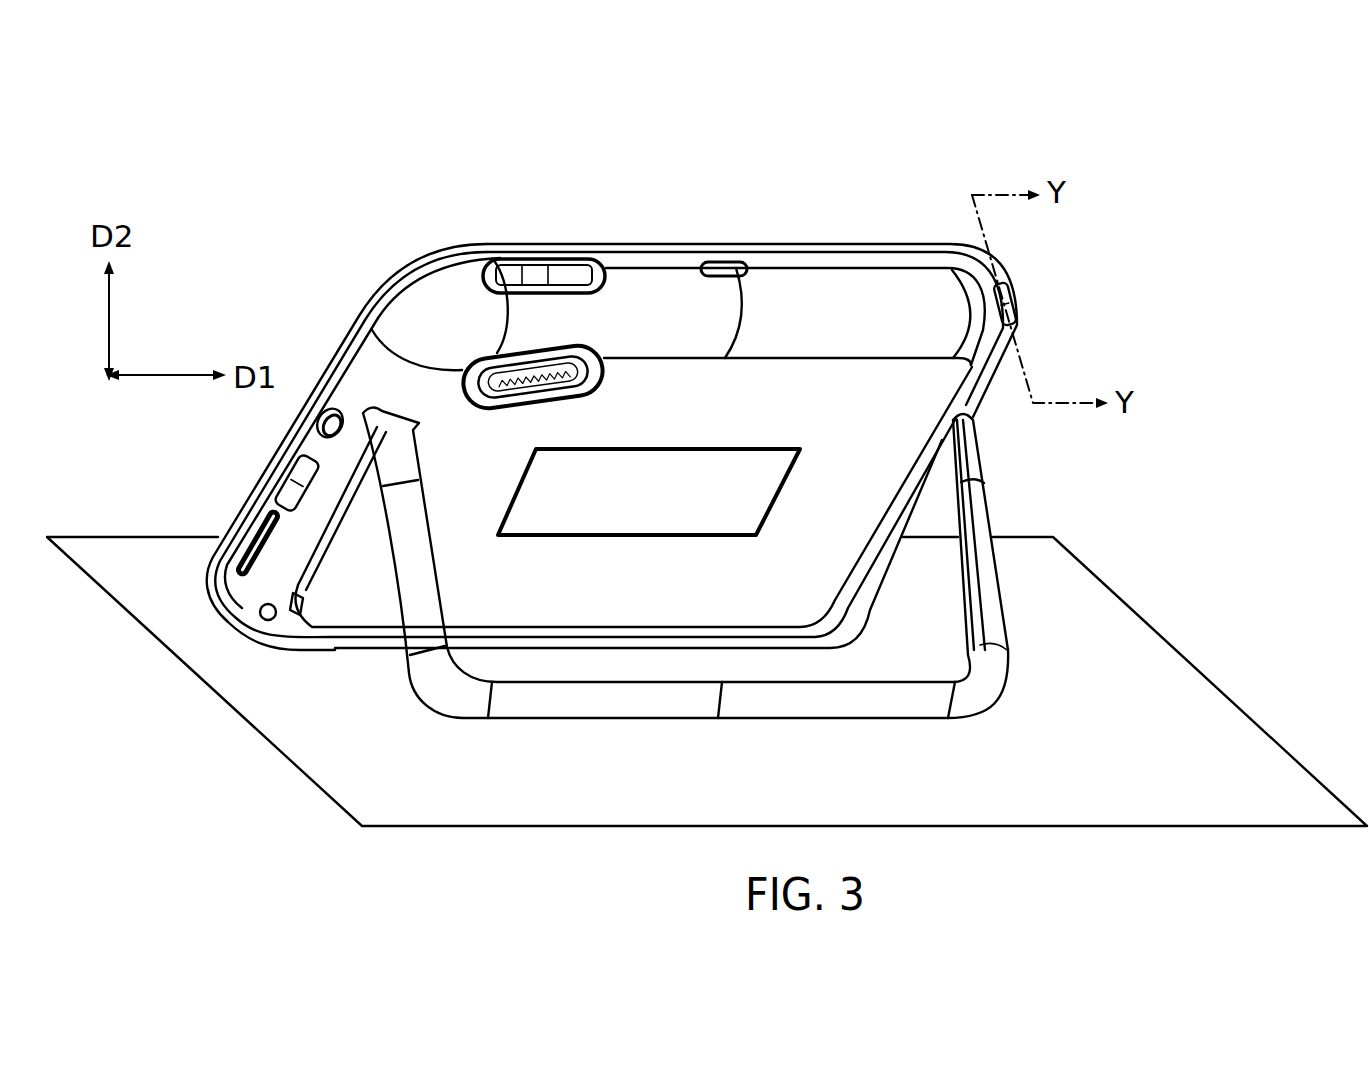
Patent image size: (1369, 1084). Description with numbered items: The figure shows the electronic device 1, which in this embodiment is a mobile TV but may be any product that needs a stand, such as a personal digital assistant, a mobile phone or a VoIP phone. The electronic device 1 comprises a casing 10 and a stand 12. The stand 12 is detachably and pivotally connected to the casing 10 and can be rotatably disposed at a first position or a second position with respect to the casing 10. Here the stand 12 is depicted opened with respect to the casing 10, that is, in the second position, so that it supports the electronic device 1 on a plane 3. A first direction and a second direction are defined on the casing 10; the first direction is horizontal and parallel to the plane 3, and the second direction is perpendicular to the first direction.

The electronic device 1 is at (612, 456).
The casing 10 is at (438, 268).
The stand 12 is at (628, 700).
The plane 3 is at (1188, 799).